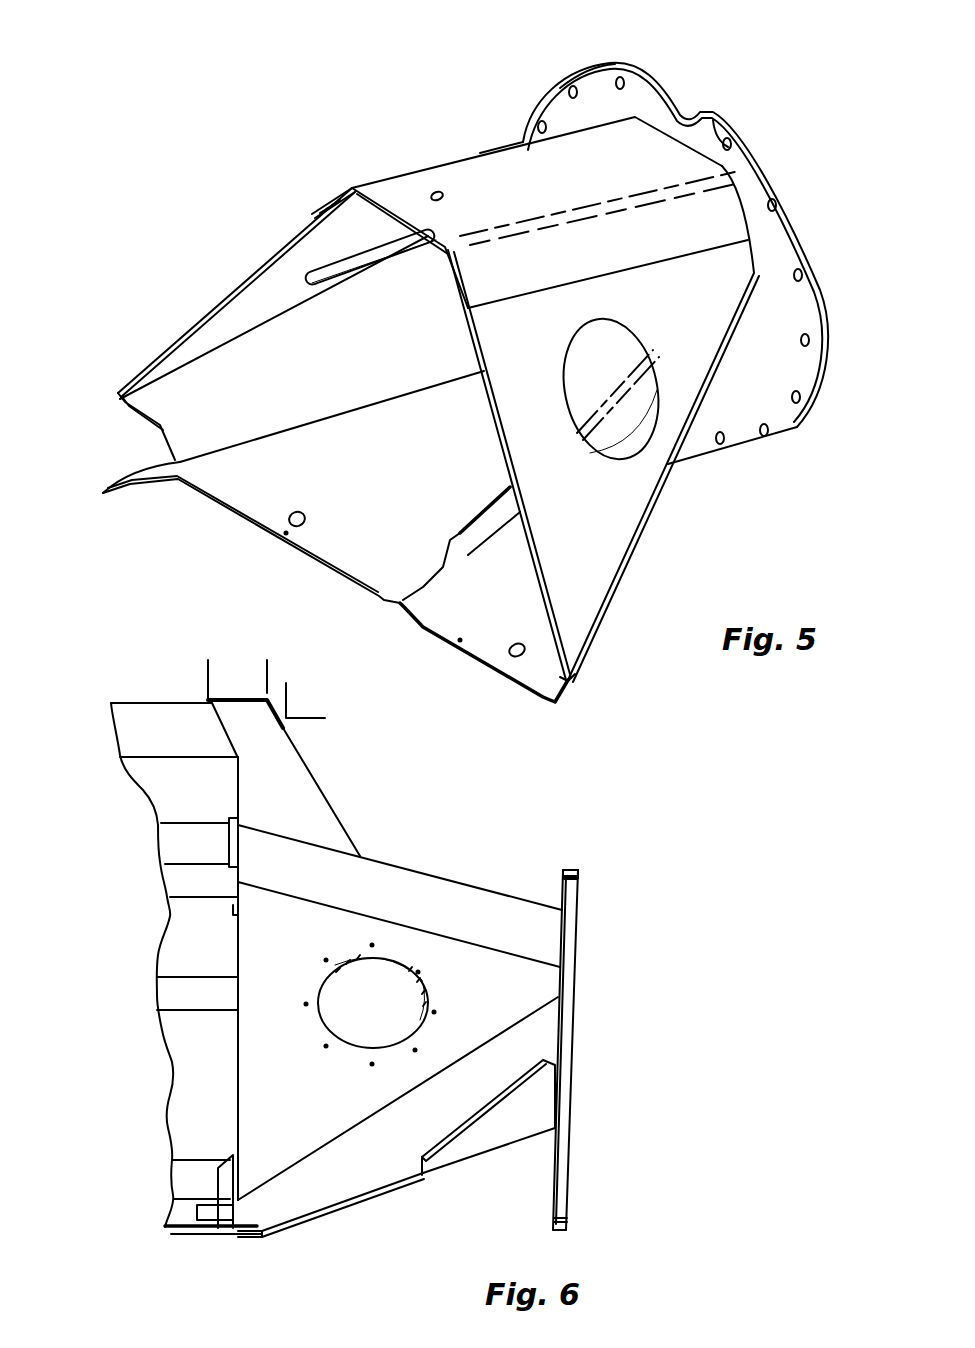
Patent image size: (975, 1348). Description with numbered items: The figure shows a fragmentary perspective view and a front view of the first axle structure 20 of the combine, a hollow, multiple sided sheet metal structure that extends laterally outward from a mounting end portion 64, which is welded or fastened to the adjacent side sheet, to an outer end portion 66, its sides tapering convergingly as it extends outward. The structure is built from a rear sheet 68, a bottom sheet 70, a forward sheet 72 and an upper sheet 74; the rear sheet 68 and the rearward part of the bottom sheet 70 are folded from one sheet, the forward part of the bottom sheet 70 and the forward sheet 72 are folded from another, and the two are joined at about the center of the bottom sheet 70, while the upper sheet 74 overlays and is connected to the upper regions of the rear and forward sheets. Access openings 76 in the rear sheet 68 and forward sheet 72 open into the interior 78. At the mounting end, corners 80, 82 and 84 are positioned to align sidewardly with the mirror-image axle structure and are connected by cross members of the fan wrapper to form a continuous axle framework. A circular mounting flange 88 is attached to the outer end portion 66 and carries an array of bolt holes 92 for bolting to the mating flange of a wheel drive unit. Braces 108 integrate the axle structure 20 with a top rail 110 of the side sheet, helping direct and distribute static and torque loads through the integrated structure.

In FIG. 5, the first axle structure 20 is at (625, 562).
In FIG. 6, the first axle structure 20 is at (382, 1193).
In FIG. 5, the mounting end portion 64 is at (560, 630).
In FIG. 6, the mounting end portion 64 is at (237, 1133).
In FIG. 5, the outer end portion 66 is at (640, 165).
In FIG. 6, the outer end portion 66 is at (562, 910).
In FIG. 5, the rear sheet 68 is at (235, 290).
In FIG. 5, the bottom sheet 70 is at (252, 522).
In FIG. 5, the forward sheet 72 is at (608, 512).
In FIG. 6, the forward sheet 72 is at (310, 1187).
In FIG. 5, the upper sheet 74 is at (505, 178).
In FIG. 6, the upper sheet 74 is at (415, 860).
In FIG. 5, the access openings 76 is at (335, 283).
In FIG. 6, the access openings 76 is at (400, 985).
In FIG. 5, the interior 78 is at (315, 377).
In FIG. 5, the corner 80 is at (115, 400).
In FIG. 6, the corner 80 is at (152, 1234).
In FIG. 5, the corner 82 is at (565, 690).
In FIG. 6, the corner 82 is at (232, 1232).
In FIG. 5, the corner 84 is at (408, 190).
In FIG. 6, the corner 84 is at (282, 832).
In FIG. 5, the circular mounting flange 88 is at (611, 62).
In FIG. 6, the circular mounting flange 88 is at (575, 870).
In FIG. 5, the bolt holes 92 is at (560, 93).
In FIG. 6, the braces 108 is at (318, 772).
In FIG. 6, the top rail 110 is at (325, 718).